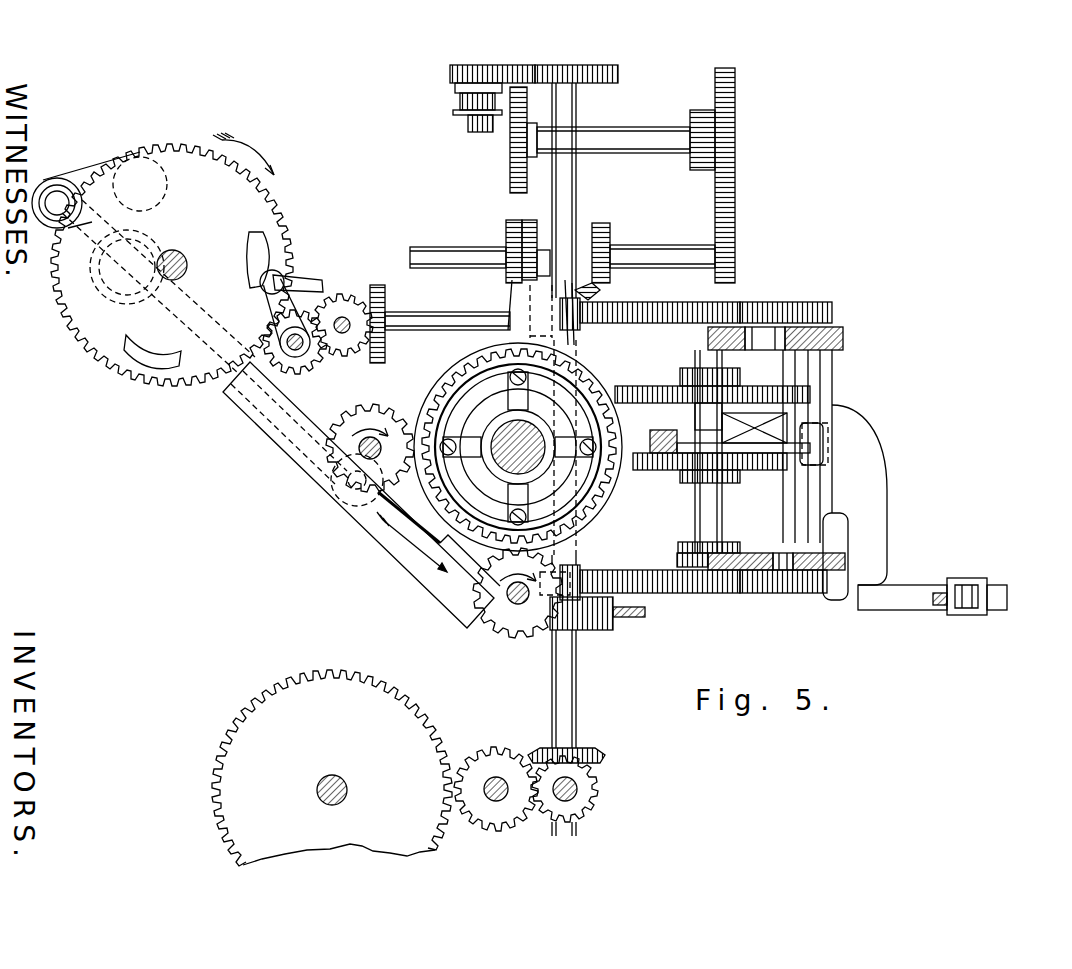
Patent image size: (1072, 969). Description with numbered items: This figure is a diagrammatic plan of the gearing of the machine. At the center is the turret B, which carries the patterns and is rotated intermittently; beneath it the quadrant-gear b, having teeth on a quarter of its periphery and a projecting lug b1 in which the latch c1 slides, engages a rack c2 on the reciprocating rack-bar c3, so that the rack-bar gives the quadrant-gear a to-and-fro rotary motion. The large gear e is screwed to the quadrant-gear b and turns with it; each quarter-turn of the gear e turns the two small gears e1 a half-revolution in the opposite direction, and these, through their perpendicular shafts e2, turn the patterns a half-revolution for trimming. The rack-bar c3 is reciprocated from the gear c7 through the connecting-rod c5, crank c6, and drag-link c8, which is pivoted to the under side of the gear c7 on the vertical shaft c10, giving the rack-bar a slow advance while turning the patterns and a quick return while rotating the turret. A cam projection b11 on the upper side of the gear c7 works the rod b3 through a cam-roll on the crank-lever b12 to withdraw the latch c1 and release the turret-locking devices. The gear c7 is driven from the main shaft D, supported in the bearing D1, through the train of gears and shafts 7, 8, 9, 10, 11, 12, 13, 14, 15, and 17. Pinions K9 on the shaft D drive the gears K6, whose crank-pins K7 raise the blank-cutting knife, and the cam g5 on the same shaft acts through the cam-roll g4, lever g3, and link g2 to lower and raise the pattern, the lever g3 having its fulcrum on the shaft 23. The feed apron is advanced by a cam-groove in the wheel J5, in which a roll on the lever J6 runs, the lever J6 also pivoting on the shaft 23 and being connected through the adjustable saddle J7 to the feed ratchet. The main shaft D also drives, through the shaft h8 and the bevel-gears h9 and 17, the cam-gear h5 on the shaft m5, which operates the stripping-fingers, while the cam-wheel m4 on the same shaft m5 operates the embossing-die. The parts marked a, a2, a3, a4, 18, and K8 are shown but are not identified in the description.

The gear c7 is at (251, 505).
The vertical shaft c10 is at (180, 260).
The drag-link c8 is at (153, 180).
The crank c6 is at (83, 248).
The connecting-rod c5 is at (167, 308).
The cam projection b11 is at (258, 246).
The rod b3 is at (296, 285).
The crank-lever b12 is at (283, 309).
The gear 7 is at (316, 366).
The gear 8 is at (476, 535).
The shaft 9 is at (340, 318).
The gear 10 is at (476, 535).
The bevel gear 11 is at (386, 308).
The shaft 12 is at (428, 313).
The yoke 13 is at (509, 310).
The gear 14 is at (506, 276).
The shaft 15 is at (455, 270).
The bevel gear 18 is at (529, 224).
The bolt or latch c1 is at (539, 258).
The bevel-gear 17 is at (582, 284).
The bevel-gear h9 is at (603, 227).
The shaft h8 is at (650, 247).
The cam-gear h5 is at (736, 162).
The shaft m5 is at (618, 128).
The cam-wheel m4 is at (511, 158).
The main shaft D is at (577, 190).
The rack a3 is at (450, 75).
The rack a4 is at (618, 74).
The collar a2 is at (455, 104).
The pinion a is at (468, 126).
The pinion K9 is at (580, 312).
The crank-pin K7 is at (740, 303).
The gear K6 is at (805, 303).
The shaft 23 is at (842, 330).
The lever g3 is at (767, 452).
The cam-wheel J5 is at (660, 386).
The gear K8 is at (722, 372).
The link g2 is at (655, 436).
The cam g5 is at (660, 468).
The cam-roll g4 is at (700, 456).
The lever J6 is at (862, 454).
The saddle J7 is at (990, 578).
The bearing D1 is at (600, 620).
The quadrant-gear b is at (506, 447).
The large gear e is at (518, 447).
The central turret B is at (518, 447).
The rack-bar c3 is at (385, 535).
The small gear e1 is at (332, 443).
The rack c2 is at (318, 412).
The perpendicular shaft e2 is at (357, 459).
The lug b1 is at (575, 327).